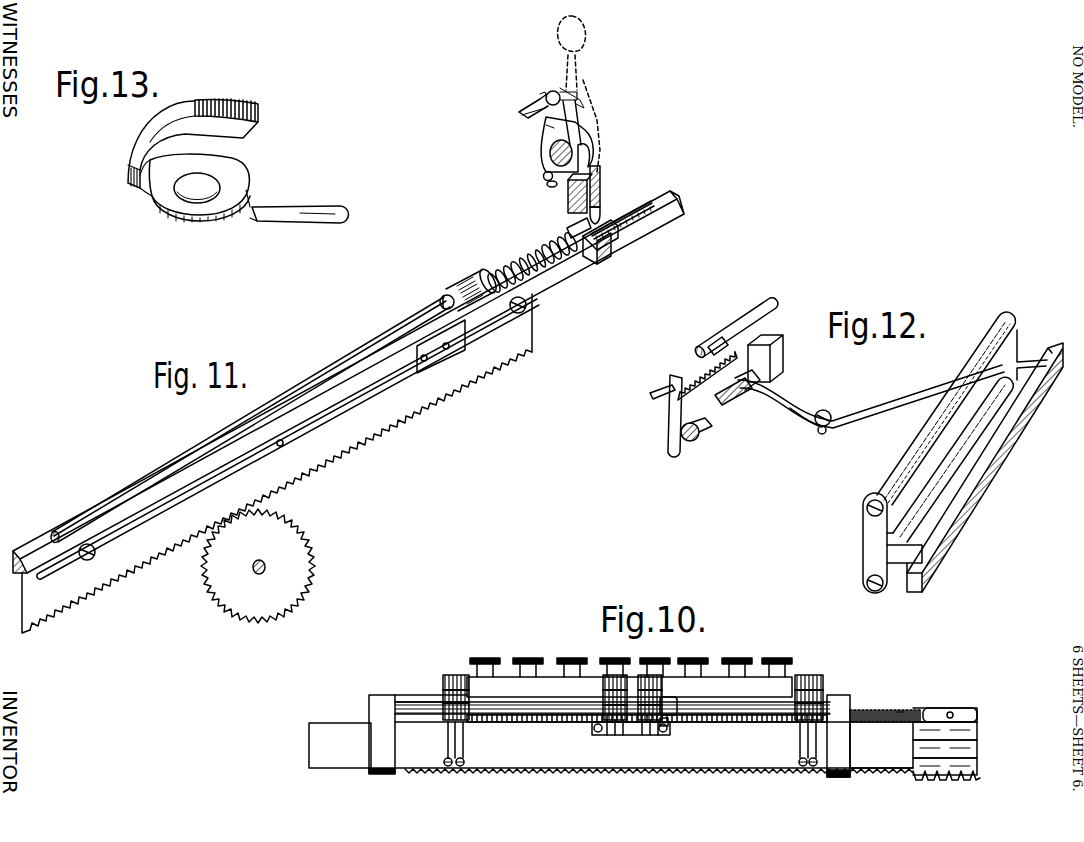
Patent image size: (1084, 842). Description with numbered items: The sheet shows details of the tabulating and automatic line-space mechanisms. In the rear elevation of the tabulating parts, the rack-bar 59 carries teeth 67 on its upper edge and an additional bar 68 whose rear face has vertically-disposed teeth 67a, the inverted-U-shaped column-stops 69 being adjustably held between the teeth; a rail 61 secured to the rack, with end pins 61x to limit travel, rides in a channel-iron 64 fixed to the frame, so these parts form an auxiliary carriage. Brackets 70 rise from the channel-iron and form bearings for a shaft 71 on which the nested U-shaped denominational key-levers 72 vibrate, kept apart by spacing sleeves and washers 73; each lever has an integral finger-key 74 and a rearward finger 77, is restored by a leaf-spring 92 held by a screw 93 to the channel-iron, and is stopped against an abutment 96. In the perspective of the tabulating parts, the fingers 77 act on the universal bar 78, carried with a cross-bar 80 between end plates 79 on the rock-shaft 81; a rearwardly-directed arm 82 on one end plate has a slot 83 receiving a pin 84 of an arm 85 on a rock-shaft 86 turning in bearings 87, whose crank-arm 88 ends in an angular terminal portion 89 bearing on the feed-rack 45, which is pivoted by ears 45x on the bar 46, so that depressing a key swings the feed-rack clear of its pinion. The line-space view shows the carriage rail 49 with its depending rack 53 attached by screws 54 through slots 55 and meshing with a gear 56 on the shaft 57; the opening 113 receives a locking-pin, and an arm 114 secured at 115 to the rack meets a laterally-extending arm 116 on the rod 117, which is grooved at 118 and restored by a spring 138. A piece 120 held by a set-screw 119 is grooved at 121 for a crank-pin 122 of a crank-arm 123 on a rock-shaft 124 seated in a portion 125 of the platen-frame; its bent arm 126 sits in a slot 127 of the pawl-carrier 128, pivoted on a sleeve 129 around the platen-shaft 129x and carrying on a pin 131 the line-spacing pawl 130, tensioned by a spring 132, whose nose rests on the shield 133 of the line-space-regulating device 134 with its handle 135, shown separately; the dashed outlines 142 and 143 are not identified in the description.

In FIG. 13, the shield 133 is at (229, 104).
In FIG. 11, the shield 133 is at (526, 108).
In FIG. 13, the line-space-regulating device 134 is at (214, 170).
In FIG. 11, the line-space-regulating device 134 is at (530, 118).
In FIG. 13, the finger-piece or handle 135 is at (325, 210).
In FIG. 11, the cross bar or rail 49 is at (669, 215).
In FIG. 11, the depending rack 53 is at (277, 463).
In FIG. 11, the screws 54 is at (95, 550).
In FIG. 11, the slots 55 is at (63, 570).
In FIG. 11, the gear 56 is at (258, 566).
In FIG. 11, the shaft 57 is at (265, 549).
In FIG. 11, the opening 113 is at (283, 443).
In FIG. 11, the arm 114 is at (440, 302).
In FIG. 11, the fastening point 115 is at (446, 350).
In FIG. 11, the laterally-extending arm 116 is at (466, 292).
In FIG. 11, the rod 117 is at (355, 370).
In FIG. 11, the longitudinal groove 118 is at (640, 203).
In FIG. 11, the set-screw 119 is at (568, 228).
In FIG. 11, the laterally-projecting piece 120 is at (608, 256).
In FIG. 11, the groove 121 is at (609, 240).
In FIG. 11, the crank-pin 122 is at (590, 262).
In FIG. 11, the crank-arm 123 is at (603, 210).
In FIG. 11, the rock-shaft 124 is at (604, 173).
In FIG. 11, the portion of the platen-frame 125 is at (598, 172).
In FIG. 11, the bent arm 126 is at (543, 180).
In FIG. 11, the slot 127 is at (551, 188).
In FIG. 11, the line-spacing pawl-carrier 128 is at (573, 128).
In FIG. 11, the sleeve 129 is at (548, 162).
In FIG. 11, the platen-shaft 129x is at (552, 148).
In FIG. 11, the line-spacing pawl 130 is at (547, 93).
In FIG. 11, the pin 131 is at (571, 82).
In FIG. 11, the spring 132 is at (538, 96).
In FIG. 11, the spring 138 is at (510, 278).
In FIG. 11, the lever alternate position 142 is at (601, 140).
In FIG. 11, the loop 143 is at (586, 33).
In FIG. 12, the feed-rack 45 is at (740, 347).
In FIG. 12, the ears 45x is at (714, 338).
In FIG. 12, the bar 46 is at (766, 302).
In FIG. 12, the universal bar 78 is at (920, 440).
In FIG. 12, the end plates 79 is at (868, 542).
In FIG. 12, the cross-bar 80 is at (985, 490).
In FIG. 12, the rod or rock-shaft 81 is at (898, 592).
In FIG. 12, the rearwardly-directed arm 82 is at (906, 398).
In FIG. 12, the slot 83 is at (831, 416).
In FIG. 12, the pin 84 is at (822, 434).
In FIG. 12, the arm 85 is at (795, 420).
In FIG. 12, the rock-shaft 86 is at (736, 402).
In FIG. 12, the bearings 87 is at (771, 365).
In FIG. 12, the crank-arm 88 is at (672, 424).
In FIG. 12, the angular forwardly-directed terminal portion 89 is at (656, 393).
In FIG. 10, the rack-bar 59 is at (977, 715).
In FIG. 10, the rail 61 is at (977, 750).
In FIG. 10, the pins 61x is at (977, 735).
In FIG. 10, the channel-iron 64 is at (881, 745).
In FIG. 10, the teeth 67 is at (884, 710).
In FIG. 10, the vertically-disposed teeth 67a is at (910, 710).
In FIG. 10, the additional bar 68 is at (950, 697).
In FIG. 10, the column-stops 69 is at (680, 704).
In FIG. 10, the brackets 70 is at (611, 736).
In FIG. 10, the shaft 71 is at (708, 725).
In FIG. 10, the denominational key-levers 72 is at (545, 690).
In FIG. 10, the spacing sleeves and washers 73 is at (412, 725).
In FIG. 10, the finger-key 74 is at (526, 660).
In FIG. 10, the finger 77 is at (659, 737).
In FIG. 10, the leaf-spring 92 is at (468, 750).
In FIG. 10, the screw 93 is at (460, 767).
In FIG. 10, the abutment 96 is at (596, 734).